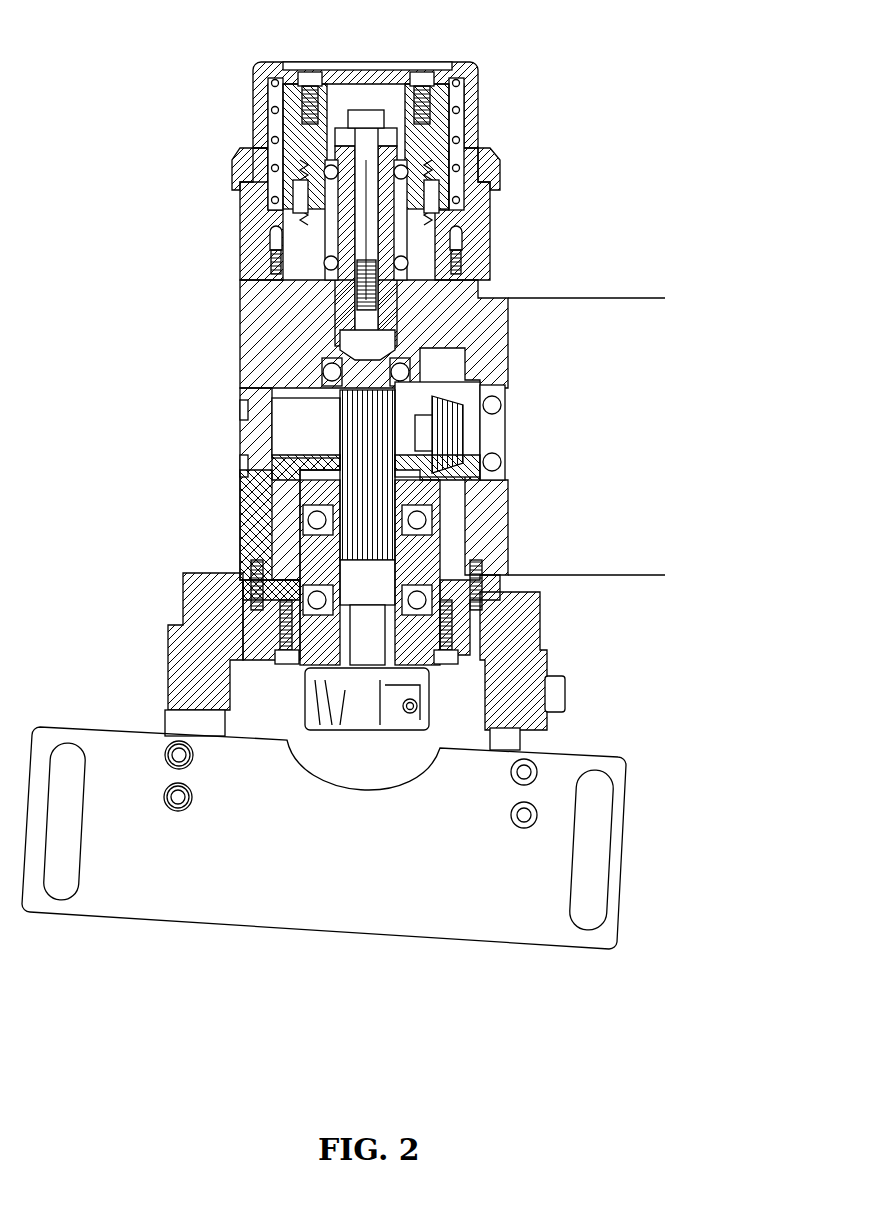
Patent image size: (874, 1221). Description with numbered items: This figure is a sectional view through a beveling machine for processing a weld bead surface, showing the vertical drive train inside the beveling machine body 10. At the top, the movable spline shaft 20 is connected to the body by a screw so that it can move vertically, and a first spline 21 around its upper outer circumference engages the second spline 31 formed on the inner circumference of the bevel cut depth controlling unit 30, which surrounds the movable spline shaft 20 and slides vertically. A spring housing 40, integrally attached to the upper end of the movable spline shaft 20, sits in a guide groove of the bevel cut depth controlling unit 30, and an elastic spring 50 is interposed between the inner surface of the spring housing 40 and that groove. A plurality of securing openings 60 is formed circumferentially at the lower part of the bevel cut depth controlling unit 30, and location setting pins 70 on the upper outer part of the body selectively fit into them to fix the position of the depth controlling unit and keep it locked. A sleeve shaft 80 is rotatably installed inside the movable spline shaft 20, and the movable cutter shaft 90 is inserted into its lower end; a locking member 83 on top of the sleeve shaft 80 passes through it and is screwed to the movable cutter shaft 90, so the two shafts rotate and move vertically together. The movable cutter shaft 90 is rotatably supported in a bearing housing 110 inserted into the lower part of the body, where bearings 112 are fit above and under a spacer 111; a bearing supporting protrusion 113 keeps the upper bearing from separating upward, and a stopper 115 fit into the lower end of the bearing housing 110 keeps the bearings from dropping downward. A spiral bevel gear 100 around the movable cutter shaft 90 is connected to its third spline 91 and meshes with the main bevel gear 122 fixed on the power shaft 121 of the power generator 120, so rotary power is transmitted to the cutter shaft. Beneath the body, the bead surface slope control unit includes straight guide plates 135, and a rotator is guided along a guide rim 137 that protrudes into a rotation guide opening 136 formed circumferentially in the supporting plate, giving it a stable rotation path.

The beveling machine body 10 is at (268, 310).
The movable spline shaft 20 is at (413, 197).
The first spline 21 is at (455, 130).
The bevel cut depth controlling unit 30 is at (236, 160).
The second spline 31 is at (300, 190).
The spring housing 40 is at (463, 72).
The elastic spring 50 is at (462, 110).
The securing openings 60 is at (472, 213).
The location setting pins 70 is at (274, 240).
The sleeve shaft 80 is at (347, 152).
The locking member 83 is at (366, 118).
The movable cutter shaft 90 is at (338, 322).
The third spline 91 is at (256, 406).
The spiral bevel gear 100 is at (365, 428).
The bearing housing 110 is at (283, 547).
The spacer 111 is at (308, 553).
The bearings 112 is at (432, 568).
The bearing supporting protrusion 113 is at (248, 468).
The stopper 115 is at (290, 637).
The power generator 120 is at (610, 325).
The power shaft 121 is at (497, 440).
The main bevel gear 122 is at (458, 406).
The straight guide plates 135 is at (316, 880).
The rotation guide opening 136 is at (510, 672).
The guide rim 137 is at (520, 680).